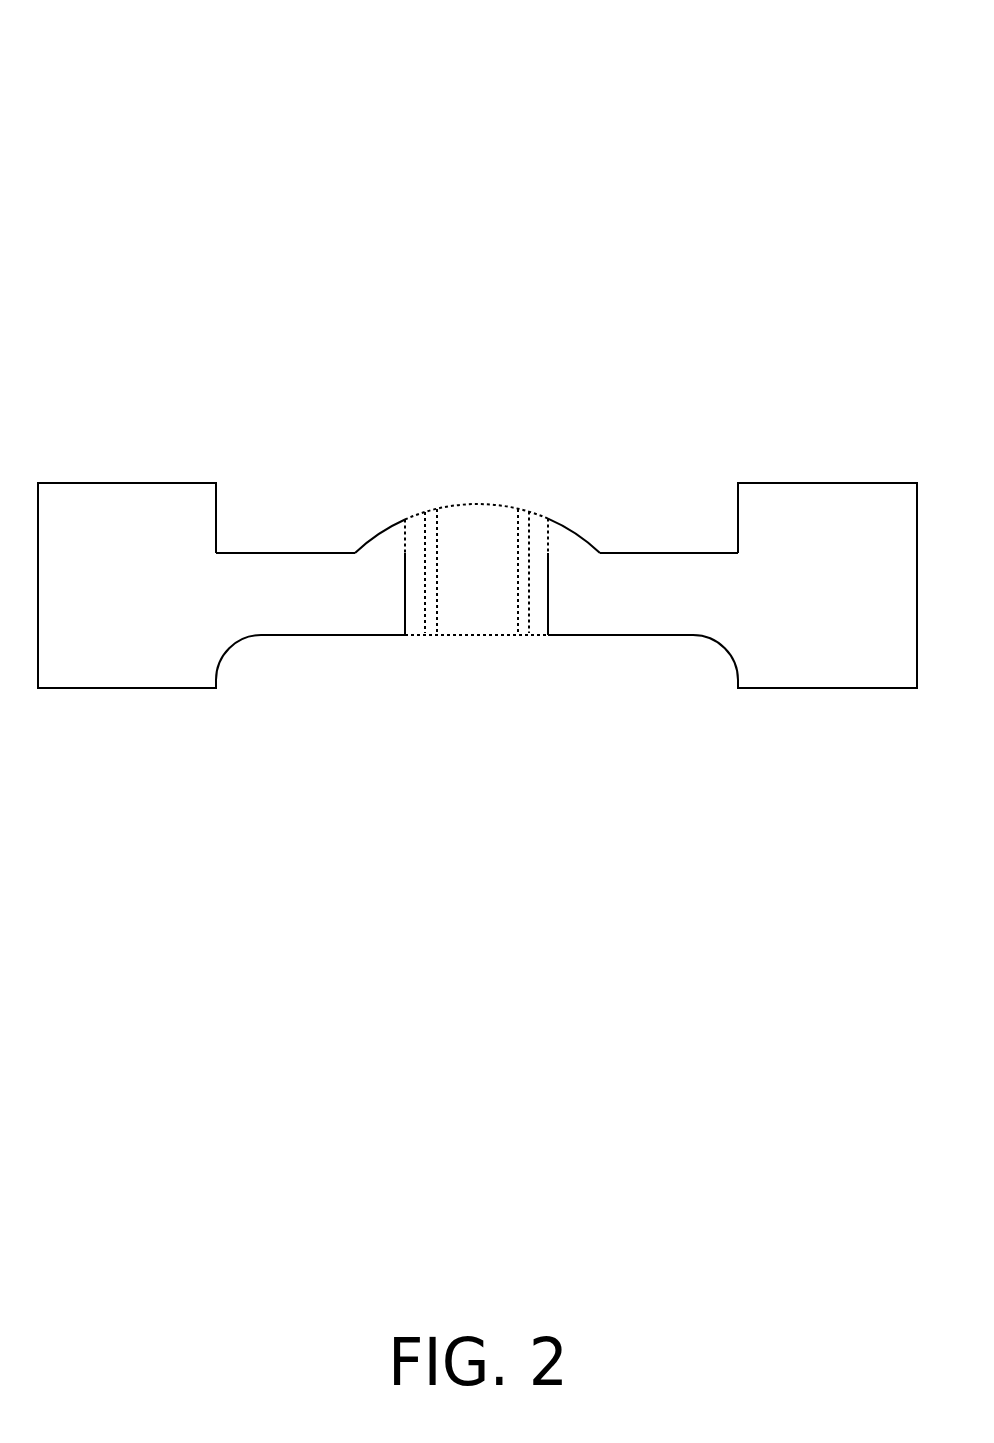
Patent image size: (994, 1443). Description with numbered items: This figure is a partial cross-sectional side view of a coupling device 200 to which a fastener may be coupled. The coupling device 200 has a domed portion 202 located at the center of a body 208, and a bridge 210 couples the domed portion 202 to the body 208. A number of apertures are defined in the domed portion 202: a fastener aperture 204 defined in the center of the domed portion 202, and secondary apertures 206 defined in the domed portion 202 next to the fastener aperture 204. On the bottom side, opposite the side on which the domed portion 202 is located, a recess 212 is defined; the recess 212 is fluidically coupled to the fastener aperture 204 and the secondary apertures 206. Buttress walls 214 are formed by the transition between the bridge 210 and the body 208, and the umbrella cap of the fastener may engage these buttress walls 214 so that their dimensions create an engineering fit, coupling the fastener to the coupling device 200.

The coupling device 200 is at (114, 40).
The domed portion 202 is at (355, 553).
The fastener aperture 204 is at (473, 620).
The secondary apertures 206 is at (417, 625).
The body 208 is at (121, 623).
The bridge 210 is at (279, 587).
The recess 212 is at (300, 663).
The buttress walls 214 is at (215, 512).